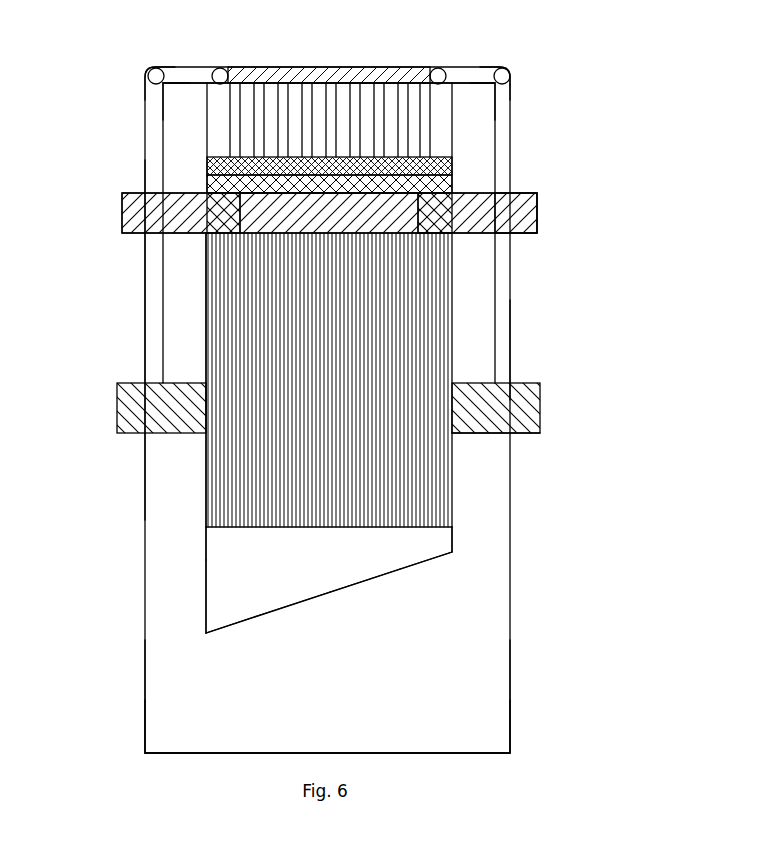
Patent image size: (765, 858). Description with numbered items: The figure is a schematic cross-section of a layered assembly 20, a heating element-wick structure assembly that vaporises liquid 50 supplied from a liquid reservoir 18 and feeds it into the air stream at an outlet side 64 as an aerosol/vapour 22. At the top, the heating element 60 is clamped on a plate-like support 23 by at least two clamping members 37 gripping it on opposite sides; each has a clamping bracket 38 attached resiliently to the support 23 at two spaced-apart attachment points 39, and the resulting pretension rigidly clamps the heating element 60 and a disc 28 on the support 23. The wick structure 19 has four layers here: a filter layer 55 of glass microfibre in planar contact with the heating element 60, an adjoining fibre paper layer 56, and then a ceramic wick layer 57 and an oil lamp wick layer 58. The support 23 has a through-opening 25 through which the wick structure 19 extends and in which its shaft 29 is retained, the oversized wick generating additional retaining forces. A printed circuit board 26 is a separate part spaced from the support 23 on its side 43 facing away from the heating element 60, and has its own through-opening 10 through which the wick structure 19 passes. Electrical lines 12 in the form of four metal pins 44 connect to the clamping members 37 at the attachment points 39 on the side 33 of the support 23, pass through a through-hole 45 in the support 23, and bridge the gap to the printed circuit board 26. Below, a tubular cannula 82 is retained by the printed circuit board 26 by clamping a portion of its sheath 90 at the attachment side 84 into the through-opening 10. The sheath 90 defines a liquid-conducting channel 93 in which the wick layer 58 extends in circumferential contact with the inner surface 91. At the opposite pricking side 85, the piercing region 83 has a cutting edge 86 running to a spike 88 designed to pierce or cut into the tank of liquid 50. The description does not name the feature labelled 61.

The through-opening 10 is at (443, 395).
The electrical lines 12 is at (146, 272).
The liquid reservoir 18 is at (510, 688).
The wick structure 19 is at (72, 155).
The layered assembly 20 is at (580, 340).
The aerosol/vapour 22 is at (355, 67).
The support 23 is at (515, 232).
The through-opening 25 is at (432, 240).
The printed circuit board 26 is at (516, 407).
The disc 28 is at (199, 186).
The shaft 29 is at (266, 385).
The side 33 is at (530, 193).
The clamping members 37 is at (162, 62).
The clamping bracket 38 is at (195, 67).
The attachment points 39 is at (452, 193).
The side 43 is at (513, 238).
The metal pins 44 is at (511, 290).
The through-hole 45 is at (121, 225).
The liquid 50 is at (327, 696).
The filter layer 55 is at (205, 162).
The fibre paper layer 56 is at (121, 212).
The ceramic wick layer 57 is at (207, 241).
The oil lamp wick layer 58 is at (286, 433).
The heating element 60 is at (441, 117).
The central plate section 61 is at (298, 216).
The outlet side 64 is at (292, 67).
The cannula 82 is at (453, 537).
The piercing region 83 is at (386, 575).
The attachment side 84 is at (455, 436).
The pricking side 85 is at (426, 560).
The cutting edge 86 is at (356, 592).
The spike 88 is at (207, 634).
The sheath 90 is at (202, 543).
The inner surface 91 is at (206, 595).
The liquid-conducting channel 93 is at (329, 580).